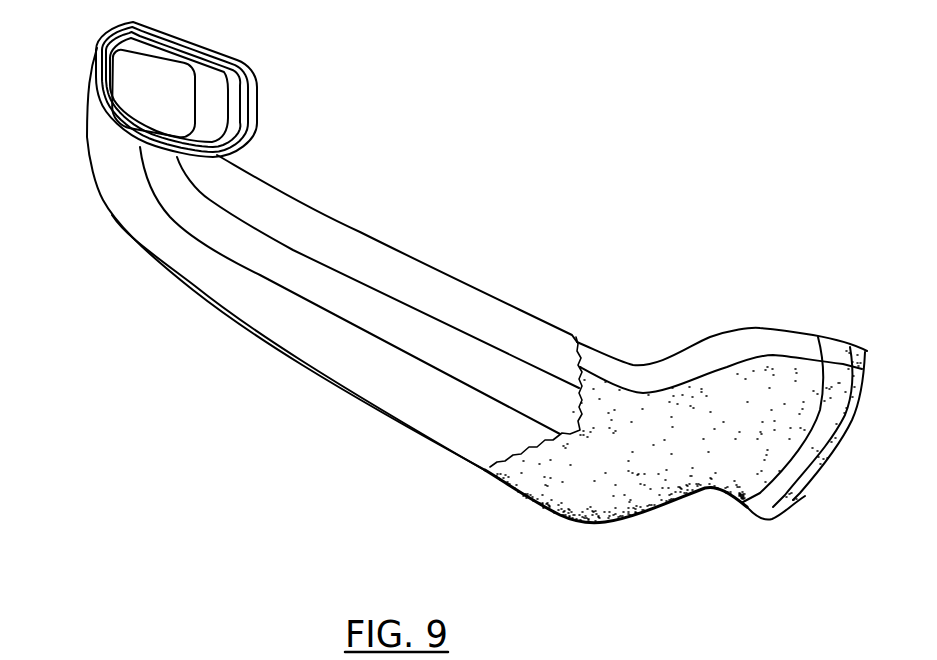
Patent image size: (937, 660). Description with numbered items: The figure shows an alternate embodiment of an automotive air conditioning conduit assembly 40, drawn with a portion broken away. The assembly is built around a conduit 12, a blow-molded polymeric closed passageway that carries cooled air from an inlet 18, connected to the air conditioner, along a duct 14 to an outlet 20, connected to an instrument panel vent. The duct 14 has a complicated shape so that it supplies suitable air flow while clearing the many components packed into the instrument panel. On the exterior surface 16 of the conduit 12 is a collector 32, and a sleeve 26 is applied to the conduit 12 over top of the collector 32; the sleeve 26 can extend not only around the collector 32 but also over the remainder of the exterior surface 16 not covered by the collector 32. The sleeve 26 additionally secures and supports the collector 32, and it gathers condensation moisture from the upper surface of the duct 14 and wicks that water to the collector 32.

The conduit 12 is at (82, 138).
The duct 14 is at (420, 260).
The exterior surface 16 is at (683, 360).
The inlet 18 is at (254, 70).
The outlet 20 is at (867, 352).
The sleeve 26 is at (277, 330).
The collector 32 is at (610, 523).
The conduit assembly 40 is at (409, 159).